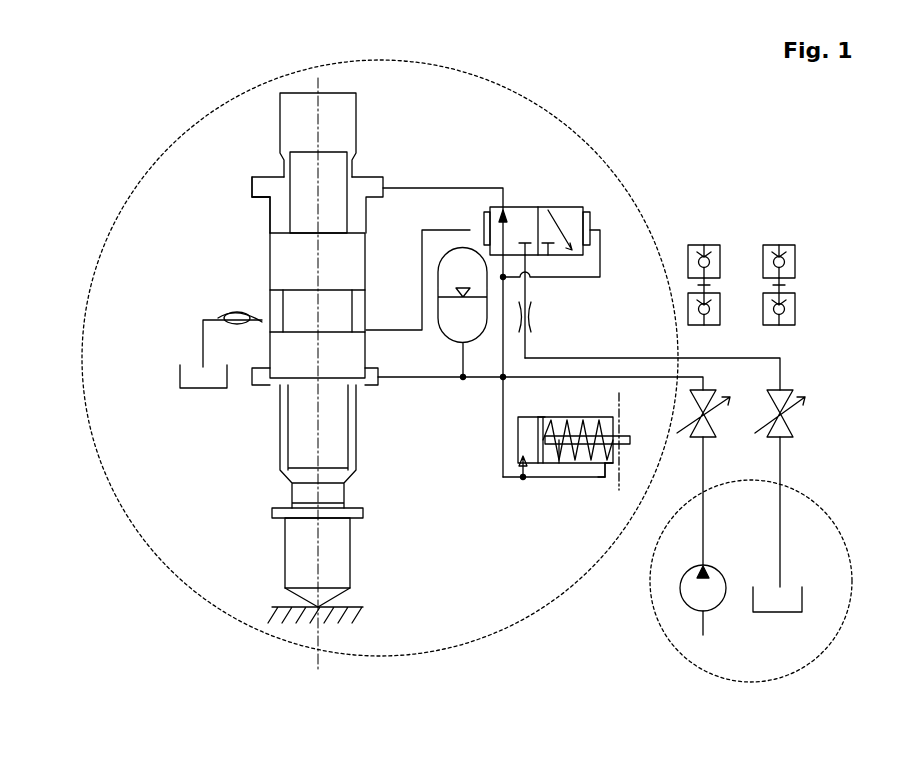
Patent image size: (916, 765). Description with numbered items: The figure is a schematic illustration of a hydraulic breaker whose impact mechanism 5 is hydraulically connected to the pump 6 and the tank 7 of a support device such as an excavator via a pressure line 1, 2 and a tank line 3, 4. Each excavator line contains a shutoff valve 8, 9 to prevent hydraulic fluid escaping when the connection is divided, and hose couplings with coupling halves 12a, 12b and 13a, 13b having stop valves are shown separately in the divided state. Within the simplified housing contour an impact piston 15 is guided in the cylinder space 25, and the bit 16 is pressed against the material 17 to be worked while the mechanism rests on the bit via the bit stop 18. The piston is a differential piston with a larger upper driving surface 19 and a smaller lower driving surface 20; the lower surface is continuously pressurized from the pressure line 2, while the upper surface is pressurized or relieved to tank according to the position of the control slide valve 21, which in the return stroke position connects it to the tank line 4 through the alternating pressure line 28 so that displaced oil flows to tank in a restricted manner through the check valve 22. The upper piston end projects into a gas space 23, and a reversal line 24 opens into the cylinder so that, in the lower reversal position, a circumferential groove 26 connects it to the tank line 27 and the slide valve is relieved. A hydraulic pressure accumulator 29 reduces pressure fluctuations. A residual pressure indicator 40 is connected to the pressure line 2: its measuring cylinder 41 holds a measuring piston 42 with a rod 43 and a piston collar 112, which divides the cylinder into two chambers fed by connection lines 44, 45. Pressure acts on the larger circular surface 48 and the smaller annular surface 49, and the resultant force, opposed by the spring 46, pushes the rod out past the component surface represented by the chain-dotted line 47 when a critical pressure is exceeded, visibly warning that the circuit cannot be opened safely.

The pressure line 1 is at (700, 480).
The pressure line 2 is at (660, 377).
The tank line 3 is at (780, 513).
The tank line 4 is at (786, 362).
The impact mechanism 5 is at (383, 163).
The pump 6 is at (692, 610).
The tank 7 is at (788, 608).
The shutoff valve 8 is at (717, 418).
The shutoff valve 9 is at (790, 418).
The coupling half 12a is at (725, 255).
The coupling half 12b is at (725, 305).
The coupling half 13a is at (807, 258).
The coupling half 13b is at (807, 308).
The impact piston 15 is at (285, 253).
The bit 16 is at (297, 558).
The material to be worked 17 is at (350, 617).
The bit stop 18 is at (367, 510).
The upper driving surface 19 is at (287, 232).
The lower driving surface 20 is at (278, 385).
The control slide valve 21 is at (535, 207).
The check valve 22 is at (535, 317).
The gas space 23 is at (340, 112).
The reversal line 24 is at (422, 253).
The cylinder space 25 is at (282, 202).
The circumferential groove 26 is at (278, 303).
The tank line 27 is at (262, 308).
The alternating pressure line 28 is at (435, 187).
The hydraulic pressure accumulator 29 is at (463, 248).
The residual pressure indicator 40 is at (560, 415).
The measuring cylinder 41 is at (538, 417).
The measuring piston 42 is at (518, 450).
The rod 43 is at (605, 477).
The connection line 44 is at (520, 468).
The connection line 45 is at (607, 470).
The spring 46 is at (610, 420).
The component surface 47 is at (612, 460).
The circular surface 48 is at (535, 432).
The annular surface 49 is at (560, 450).
The piston collar 112 is at (545, 425).